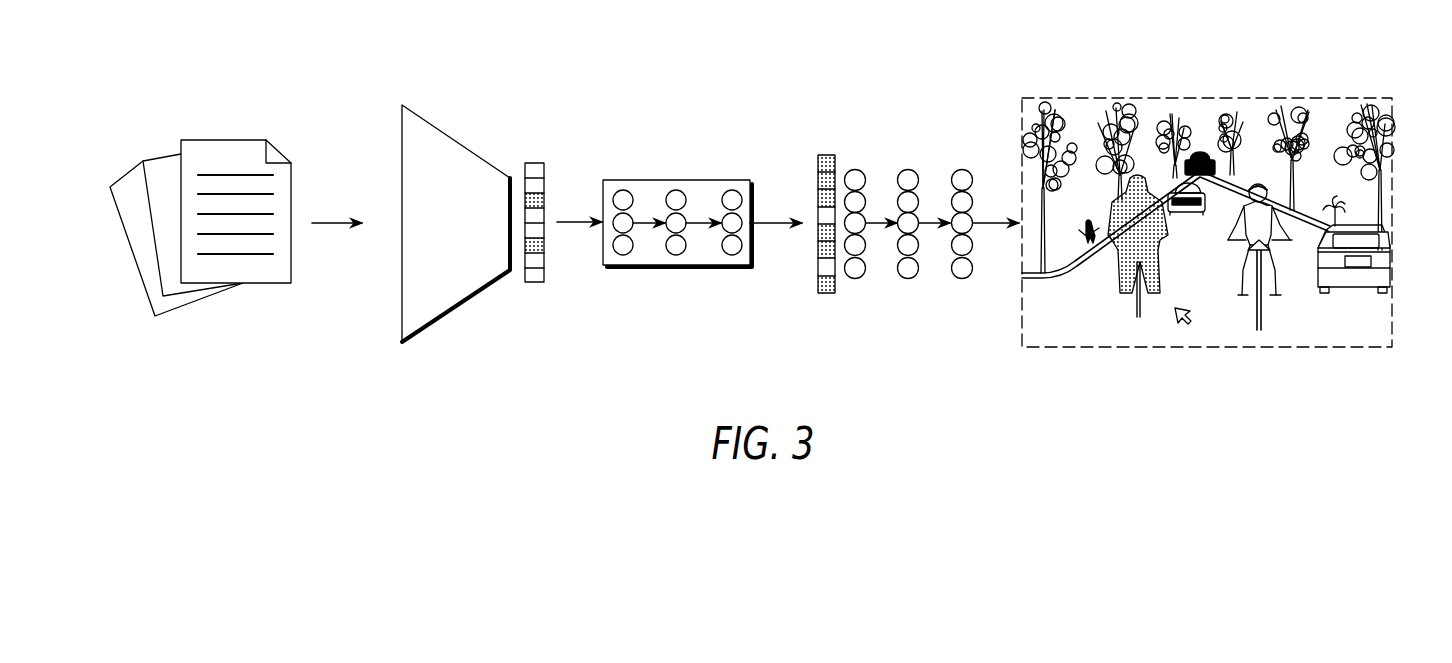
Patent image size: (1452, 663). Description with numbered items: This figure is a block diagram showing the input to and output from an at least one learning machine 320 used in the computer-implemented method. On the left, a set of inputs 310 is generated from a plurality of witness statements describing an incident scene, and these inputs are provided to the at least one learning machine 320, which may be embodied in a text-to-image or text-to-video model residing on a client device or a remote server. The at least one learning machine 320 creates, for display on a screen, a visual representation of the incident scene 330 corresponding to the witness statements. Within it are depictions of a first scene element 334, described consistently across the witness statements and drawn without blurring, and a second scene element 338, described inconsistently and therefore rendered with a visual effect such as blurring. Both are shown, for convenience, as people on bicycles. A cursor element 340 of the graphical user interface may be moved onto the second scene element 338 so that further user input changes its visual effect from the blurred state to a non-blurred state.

The set of inputs 310 is at (224, 140).
The at least one learning machine 320 is at (397, 92).
The visual representation of the incident scene 330 is at (1208, 226).
The first scene element 334 is at (1287, 250).
The second scene element 338 is at (1120, 262).
The cursor element 340 is at (1181, 327).